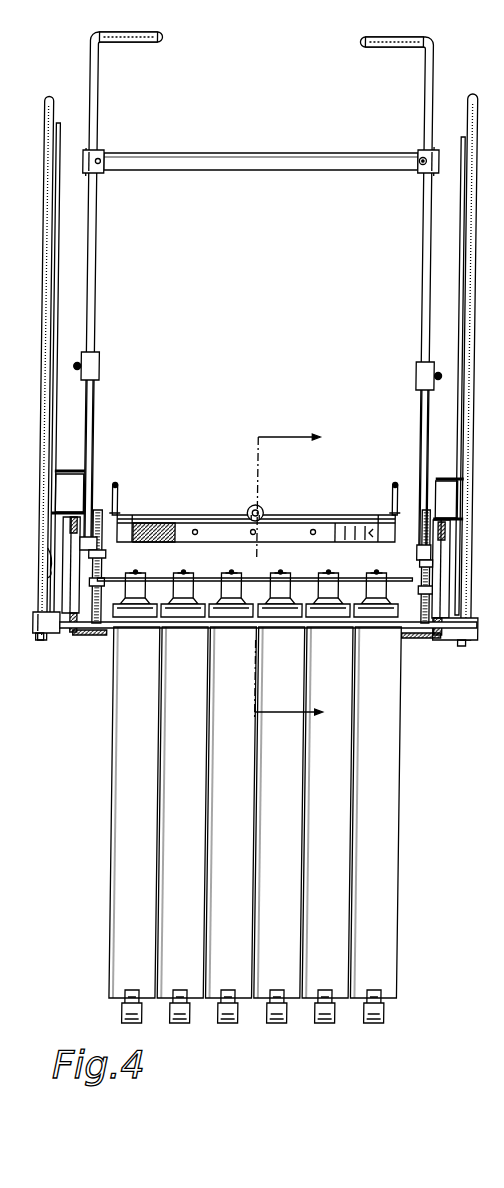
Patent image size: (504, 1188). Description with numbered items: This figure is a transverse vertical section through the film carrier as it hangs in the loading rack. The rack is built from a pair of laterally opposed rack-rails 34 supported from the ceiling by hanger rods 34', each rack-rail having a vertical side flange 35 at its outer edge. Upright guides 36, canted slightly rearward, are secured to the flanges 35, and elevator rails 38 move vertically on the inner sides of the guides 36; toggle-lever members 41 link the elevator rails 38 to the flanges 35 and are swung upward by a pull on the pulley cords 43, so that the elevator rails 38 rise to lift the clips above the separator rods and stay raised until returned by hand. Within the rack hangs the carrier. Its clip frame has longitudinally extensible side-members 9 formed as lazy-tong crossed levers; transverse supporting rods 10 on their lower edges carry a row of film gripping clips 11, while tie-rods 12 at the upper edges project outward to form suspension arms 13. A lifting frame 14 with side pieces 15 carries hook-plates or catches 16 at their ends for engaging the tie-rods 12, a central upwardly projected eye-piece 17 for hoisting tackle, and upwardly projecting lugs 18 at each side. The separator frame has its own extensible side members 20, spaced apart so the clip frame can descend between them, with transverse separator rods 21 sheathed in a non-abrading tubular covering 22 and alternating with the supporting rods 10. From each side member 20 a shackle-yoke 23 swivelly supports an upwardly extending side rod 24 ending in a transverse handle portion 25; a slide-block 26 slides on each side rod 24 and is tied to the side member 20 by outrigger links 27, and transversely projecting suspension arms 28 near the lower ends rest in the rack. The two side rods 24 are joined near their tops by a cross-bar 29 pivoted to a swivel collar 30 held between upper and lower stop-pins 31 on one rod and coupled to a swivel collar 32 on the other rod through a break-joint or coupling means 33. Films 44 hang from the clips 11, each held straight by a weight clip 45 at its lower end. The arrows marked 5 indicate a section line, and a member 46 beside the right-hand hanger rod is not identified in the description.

The section line 5- 5 is at (298, 577).
The side-members 9 is at (132, 542).
The transverse supporting rods 10 is at (330, 580).
The film gripping devices or clips 11 is at (232, 580).
The tie-rods 12 is at (256, 521).
The suspension arms 13 is at (75, 511).
The lifting frame 14 is at (305, 528).
The side pieces 15 is at (140, 523).
The hook-plates or catches 16 is at (125, 500).
The eye-piece 17 is at (270, 511).
The lugs 18 is at (123, 483).
The side members 20 is at (115, 596).
The transverse separator rods 21 is at (186, 630).
The tubular covering 22 is at (236, 630).
The shackle-yoke 23 is at (104, 545).
The side rod 24 is at (99, 243).
The transverse handle portion 25 is at (152, 34).
The slide-block 26 is at (104, 365).
The outrigger links 27 is at (100, 397).
The suspension arms 28 is at (72, 470).
The cross-bar 29 is at (238, 153).
The swivel collar 30 is at (85, 160).
The stop-pins 31 is at (88, 149).
The swivel collar 32 is at (441, 161).
The break-joint or coupling means 33 is at (423, 165).
The rack-rails 34 is at (268, 655).
The hanger rods 34' is at (271, 350).
The vertical side flanges 35 is at (80, 632).
The upright guides 36 is at (52, 633).
The elevator rails 38 is at (83, 520).
The toggle-lever members 41 is at (52, 563).
The pulley cords 43 is at (62, 222).
The strips 44 is at (346, 832).
The weight clip 45 is at (278, 1027).
The side bar 46 is at (467, 225).